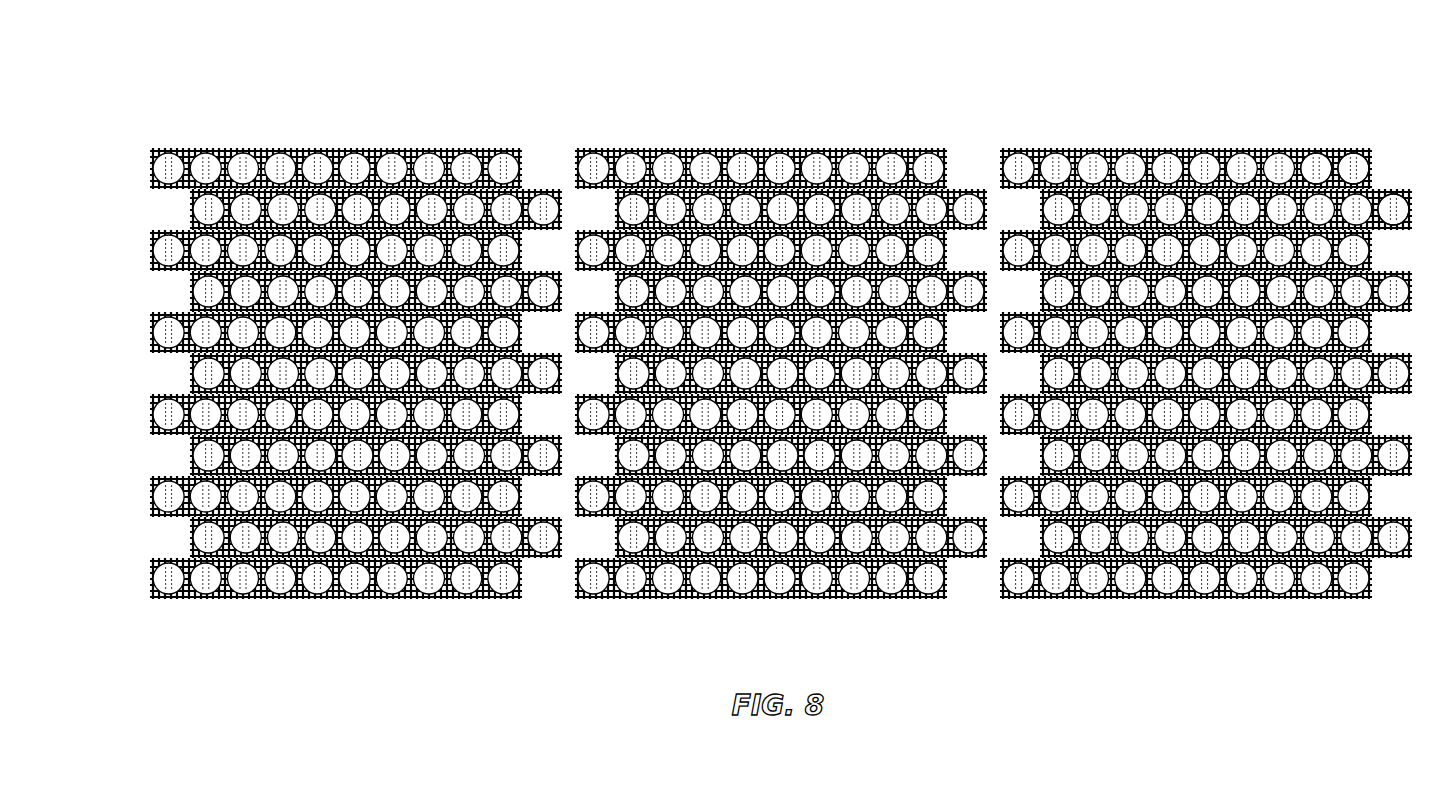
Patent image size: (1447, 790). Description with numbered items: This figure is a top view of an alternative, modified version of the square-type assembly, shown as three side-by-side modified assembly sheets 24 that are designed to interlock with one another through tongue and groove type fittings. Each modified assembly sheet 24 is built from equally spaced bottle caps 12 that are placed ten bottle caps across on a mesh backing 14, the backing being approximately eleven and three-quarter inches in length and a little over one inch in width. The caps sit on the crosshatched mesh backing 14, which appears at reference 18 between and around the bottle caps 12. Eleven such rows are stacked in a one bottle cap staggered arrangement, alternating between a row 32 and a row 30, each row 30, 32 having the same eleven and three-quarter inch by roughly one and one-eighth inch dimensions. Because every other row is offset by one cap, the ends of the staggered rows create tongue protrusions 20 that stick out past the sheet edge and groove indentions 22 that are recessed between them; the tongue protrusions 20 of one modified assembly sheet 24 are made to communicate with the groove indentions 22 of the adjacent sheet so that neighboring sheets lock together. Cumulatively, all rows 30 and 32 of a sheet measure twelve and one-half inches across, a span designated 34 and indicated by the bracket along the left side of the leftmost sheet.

The mesh backing 14 is at (762, 413).
The modified assembly sheet 24 is at (563, 140).
The cumulative width of all rows 34 is at (130, 147).
The row 32 is at (143, 175).
The row 30 is at (170, 218).
The substrate mesh 18 is at (1332, 150).
The bottle cap 12 is at (1356, 173).
The tongue protrusion 20 is at (1392, 217).
The groove indention 22 is at (1395, 253).